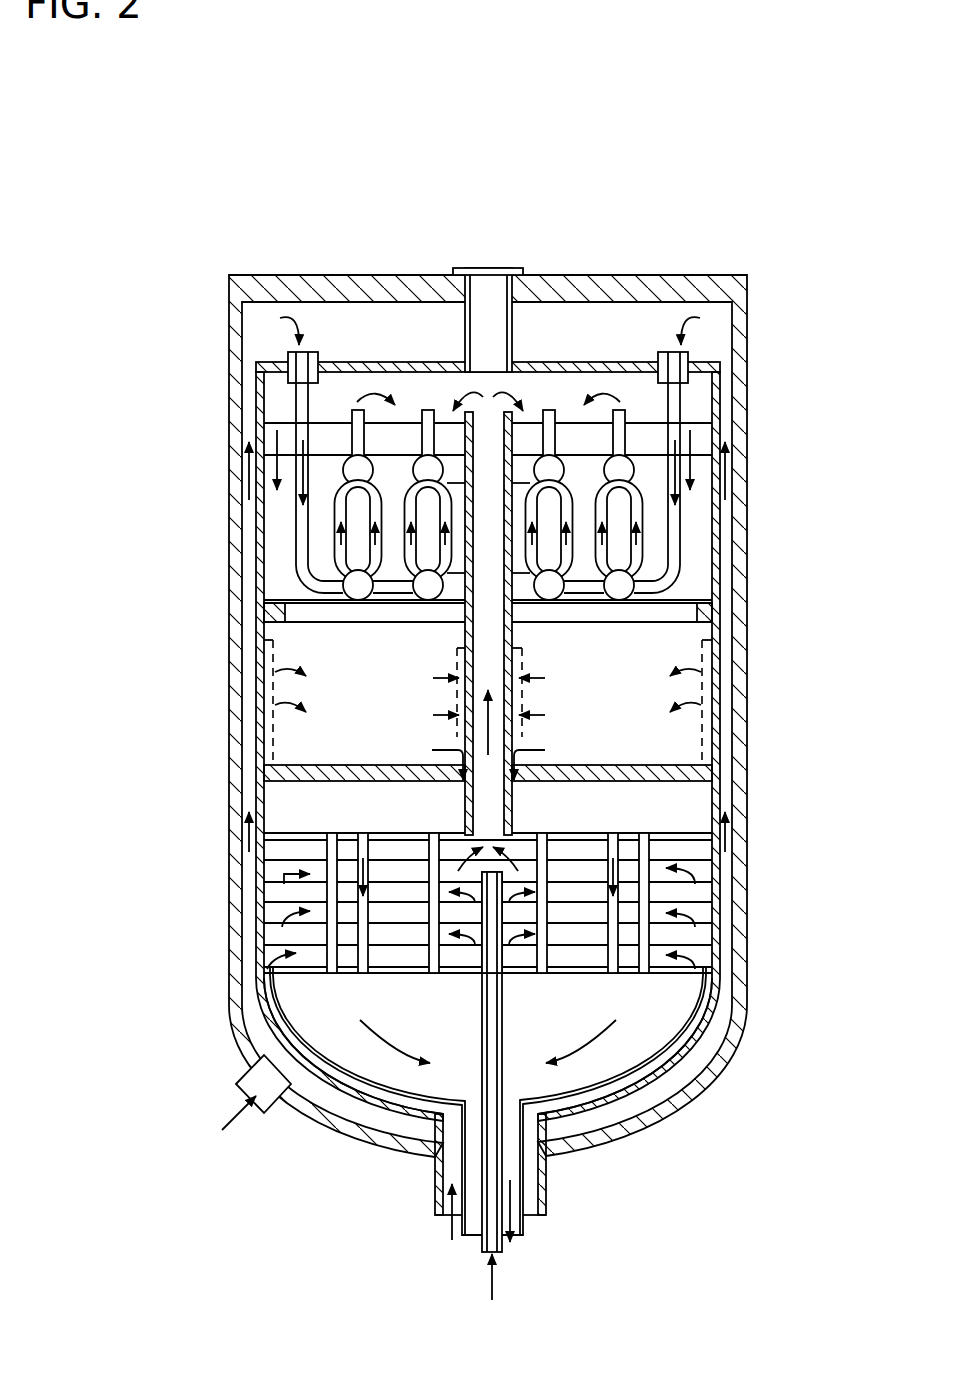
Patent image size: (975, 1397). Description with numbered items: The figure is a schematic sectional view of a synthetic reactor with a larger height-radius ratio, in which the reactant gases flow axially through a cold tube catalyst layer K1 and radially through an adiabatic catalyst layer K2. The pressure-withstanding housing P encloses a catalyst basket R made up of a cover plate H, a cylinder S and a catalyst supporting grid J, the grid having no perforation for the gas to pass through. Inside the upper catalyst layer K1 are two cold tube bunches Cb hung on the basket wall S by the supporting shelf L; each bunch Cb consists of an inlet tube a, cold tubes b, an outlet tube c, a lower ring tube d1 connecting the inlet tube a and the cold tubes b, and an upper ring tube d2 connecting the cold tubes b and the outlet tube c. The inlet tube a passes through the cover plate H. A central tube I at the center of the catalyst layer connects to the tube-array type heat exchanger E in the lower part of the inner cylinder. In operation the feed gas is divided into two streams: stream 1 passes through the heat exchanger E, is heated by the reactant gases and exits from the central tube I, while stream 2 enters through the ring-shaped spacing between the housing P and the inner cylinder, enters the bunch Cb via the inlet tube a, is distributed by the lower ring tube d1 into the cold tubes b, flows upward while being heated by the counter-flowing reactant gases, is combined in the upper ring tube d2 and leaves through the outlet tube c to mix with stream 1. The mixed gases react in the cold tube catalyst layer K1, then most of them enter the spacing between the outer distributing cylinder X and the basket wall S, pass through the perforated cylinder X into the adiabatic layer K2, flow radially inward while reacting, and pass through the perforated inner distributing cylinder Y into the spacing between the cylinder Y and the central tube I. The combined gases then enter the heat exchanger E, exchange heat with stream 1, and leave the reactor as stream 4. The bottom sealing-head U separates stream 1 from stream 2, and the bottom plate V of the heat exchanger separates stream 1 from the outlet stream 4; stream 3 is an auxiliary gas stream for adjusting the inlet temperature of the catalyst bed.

The housing P is at (238, 292).
The cover plate H is at (262, 366).
The cylinder S is at (259, 405).
The inlet tube a is at (690, 362).
The outlet tube c is at (621, 412).
The ring tube d2 is at (621, 468).
The cold tubes b is at (637, 510).
The cold tube catalyst layer K1 is at (585, 565).
The ring tube d1 is at (621, 597).
The adiabatic catalyst layer K2 is at (653, 628).
The cold tube bunch Cb is at (357, 565).
The supporting shelf L is at (280, 610).
The catalyst basket R is at (300, 697).
The central tube I is at (512, 730).
The outer distributing cylinder X is at (703, 737).
The inner distributing cylinder Y is at (522, 739).
The catalyst supporting grid J is at (282, 777).
The heat exchanger E is at (285, 893).
The bottom plate V is at (657, 1055).
The bottom sealing-head U is at (623, 1105).
The feed gas stream 1 is at (490, 1192).
The feed gas stream 2 is at (242, 1111).
The gas stream 3 is at (488, 858).
The outlet gas stream 4 is at (511, 1225).